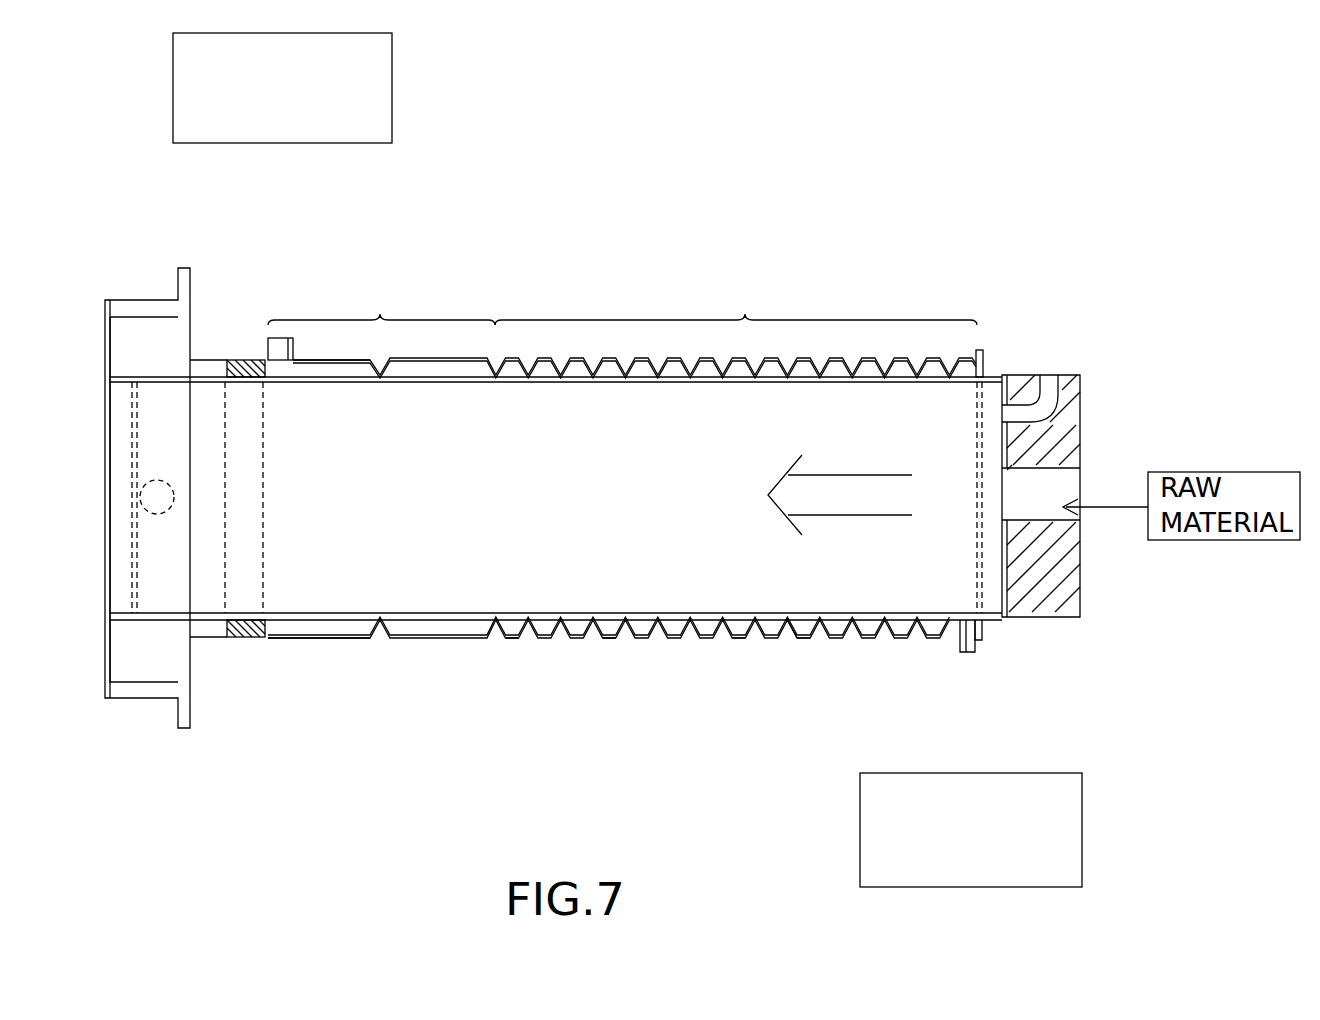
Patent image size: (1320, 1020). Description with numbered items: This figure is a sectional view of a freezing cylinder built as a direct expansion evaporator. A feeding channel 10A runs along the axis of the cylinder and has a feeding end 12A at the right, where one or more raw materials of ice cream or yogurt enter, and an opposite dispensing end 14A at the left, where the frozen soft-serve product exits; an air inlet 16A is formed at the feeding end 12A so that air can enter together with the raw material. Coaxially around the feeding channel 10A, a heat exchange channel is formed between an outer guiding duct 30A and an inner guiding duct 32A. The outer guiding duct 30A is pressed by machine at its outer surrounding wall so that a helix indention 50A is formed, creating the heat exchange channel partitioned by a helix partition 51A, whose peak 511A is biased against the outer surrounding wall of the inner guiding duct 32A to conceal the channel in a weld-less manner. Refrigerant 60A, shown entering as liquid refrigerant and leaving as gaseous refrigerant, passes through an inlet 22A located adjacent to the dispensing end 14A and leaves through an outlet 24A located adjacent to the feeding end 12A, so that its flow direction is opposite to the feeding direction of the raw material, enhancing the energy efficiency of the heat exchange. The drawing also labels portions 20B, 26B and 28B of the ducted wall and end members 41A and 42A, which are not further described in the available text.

The feeding channel 10A is at (312, 557).
The feeding end 12A is at (1065, 492).
The dispensing end 14A is at (113, 515).
The air inlet 16A is at (1052, 385).
The outer tube 20B is at (435, 630).
The inlet 22A is at (290, 340).
The outlet 24A is at (976, 640).
The flat portion 26B is at (381, 301).
The corrugated portion 28B is at (736, 301).
The outer guiding duct 30A is at (467, 640).
The inner guiding duct 32A is at (610, 642).
The end fitting 41A is at (982, 630).
The seal 42A is at (242, 638).
The helix indention 50A is at (811, 654).
The helix partition 51A is at (795, 640).
The peak 511A is at (753, 632).
The refrigerant 60A is at (978, 762).